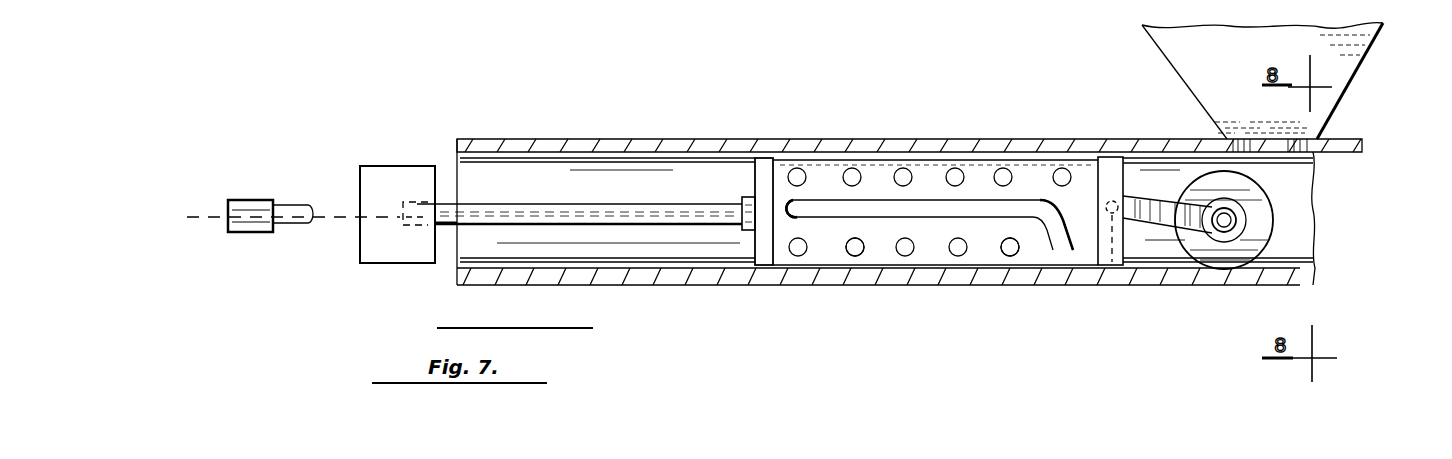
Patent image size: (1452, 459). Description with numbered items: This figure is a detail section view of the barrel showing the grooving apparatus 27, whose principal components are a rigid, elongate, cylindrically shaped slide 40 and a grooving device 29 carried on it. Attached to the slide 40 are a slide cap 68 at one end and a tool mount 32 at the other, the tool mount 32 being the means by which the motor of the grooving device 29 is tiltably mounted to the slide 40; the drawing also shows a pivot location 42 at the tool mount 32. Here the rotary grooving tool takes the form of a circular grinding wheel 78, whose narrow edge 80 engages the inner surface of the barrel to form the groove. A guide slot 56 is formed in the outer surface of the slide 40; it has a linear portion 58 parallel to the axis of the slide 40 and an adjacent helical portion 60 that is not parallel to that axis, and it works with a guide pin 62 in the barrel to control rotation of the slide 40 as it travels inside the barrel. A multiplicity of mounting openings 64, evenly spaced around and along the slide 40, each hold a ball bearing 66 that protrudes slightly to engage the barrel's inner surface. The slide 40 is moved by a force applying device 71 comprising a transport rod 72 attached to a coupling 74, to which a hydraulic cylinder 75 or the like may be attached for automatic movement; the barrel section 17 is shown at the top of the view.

The hopper 17 is at (1180, 88).
The grooving apparatus 27 is at (960, 223).
The grooving device 29 is at (1133, 237).
The tool mount 32 is at (1113, 282).
The slide 40 is at (1043, 147).
The pivot pin 42 is at (1112, 265).
The guide slot 56 is at (843, 217).
The linear portion 58 is at (928, 208).
The helical portion 60 is at (1065, 237).
The guide pin 62 is at (795, 198).
The mounting openings 64 is at (850, 252).
The ball bearing 66 is at (898, 299).
The slide cap 68 is at (762, 183).
The force applying device 71 is at (445, 227).
The transport rod 72 is at (512, 203).
The coupling 74 is at (362, 180).
The hydraulic cylinder 75 is at (250, 207).
The grinding wheel 78 is at (1222, 260).
The narrow edge 80 is at (1257, 240).